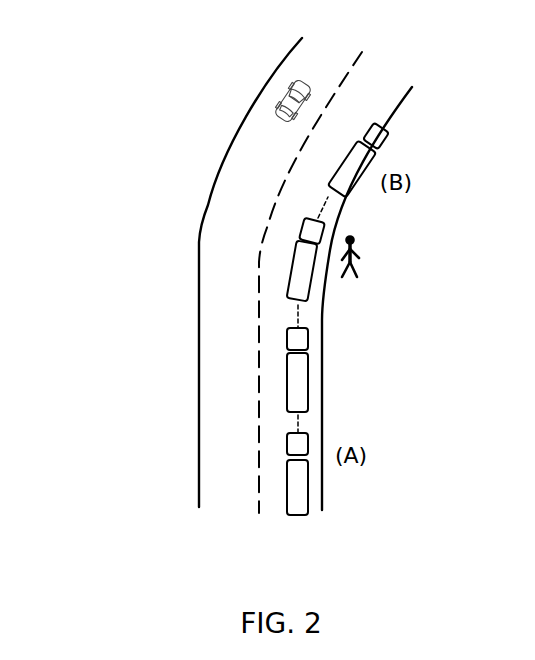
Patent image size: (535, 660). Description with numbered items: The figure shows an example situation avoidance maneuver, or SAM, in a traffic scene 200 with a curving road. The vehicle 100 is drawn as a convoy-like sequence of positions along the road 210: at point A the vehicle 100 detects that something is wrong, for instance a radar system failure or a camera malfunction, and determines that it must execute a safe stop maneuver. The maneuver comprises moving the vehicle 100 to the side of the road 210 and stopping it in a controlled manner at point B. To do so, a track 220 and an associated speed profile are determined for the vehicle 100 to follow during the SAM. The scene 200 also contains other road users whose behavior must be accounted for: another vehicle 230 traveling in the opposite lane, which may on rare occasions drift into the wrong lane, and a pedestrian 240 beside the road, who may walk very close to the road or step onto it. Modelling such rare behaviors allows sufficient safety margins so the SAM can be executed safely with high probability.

The vehicle 100 is at (312, 483).
The driving environment / scene 200 is at (114, 71).
The road 210 is at (198, 282).
The track 220 is at (325, 195).
The other vehicle 230 is at (289, 88).
The pedestrian 240 is at (356, 269).